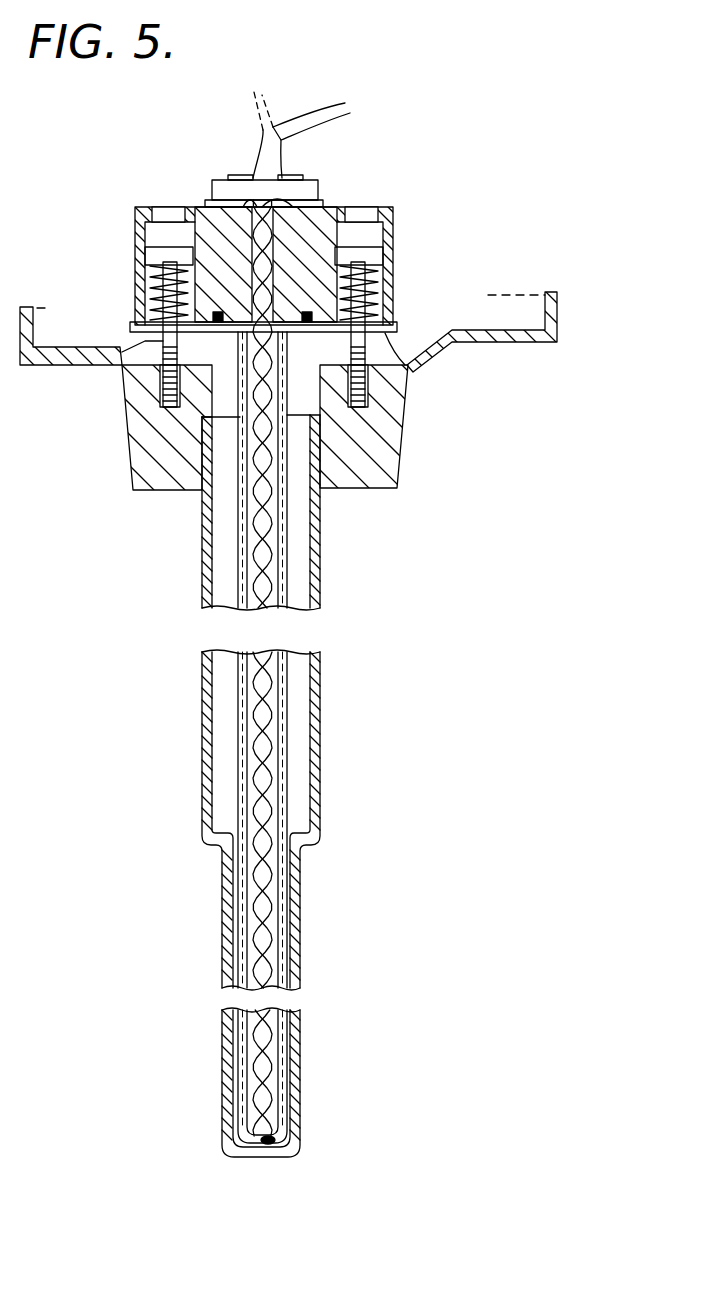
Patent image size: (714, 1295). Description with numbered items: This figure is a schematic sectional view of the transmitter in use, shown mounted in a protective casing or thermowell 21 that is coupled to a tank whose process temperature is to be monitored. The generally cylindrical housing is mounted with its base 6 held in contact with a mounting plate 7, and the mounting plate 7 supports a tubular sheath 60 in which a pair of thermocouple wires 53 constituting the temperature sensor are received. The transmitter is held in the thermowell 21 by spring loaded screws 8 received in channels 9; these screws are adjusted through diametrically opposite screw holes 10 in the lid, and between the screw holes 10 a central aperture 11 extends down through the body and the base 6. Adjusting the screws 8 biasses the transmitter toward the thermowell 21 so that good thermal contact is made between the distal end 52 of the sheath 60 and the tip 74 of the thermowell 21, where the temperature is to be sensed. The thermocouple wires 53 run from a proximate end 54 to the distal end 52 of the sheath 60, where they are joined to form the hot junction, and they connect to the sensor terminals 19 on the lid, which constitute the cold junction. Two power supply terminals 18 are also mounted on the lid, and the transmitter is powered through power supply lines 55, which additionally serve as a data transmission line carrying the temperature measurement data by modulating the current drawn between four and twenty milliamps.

The base 6 is at (400, 452).
The mounting plate 7 is at (412, 372).
The spring loaded screws 8 is at (165, 340).
The channels 9 is at (148, 278).
The screw holes 10 is at (167, 212).
The central aperture 11 is at (268, 258).
The power supply terminals 18 is at (290, 178).
The sensor terminals 19 is at (320, 200).
The thermowell 21 is at (557, 323).
The distal end 52 is at (223, 1095).
The thermocouple wires 53 is at (253, 730).
The proximate end 54 is at (240, 517).
The power supply lines 55 is at (329, 112).
The tubular sheath 60 is at (285, 807).
The tip 74 is at (265, 1152).